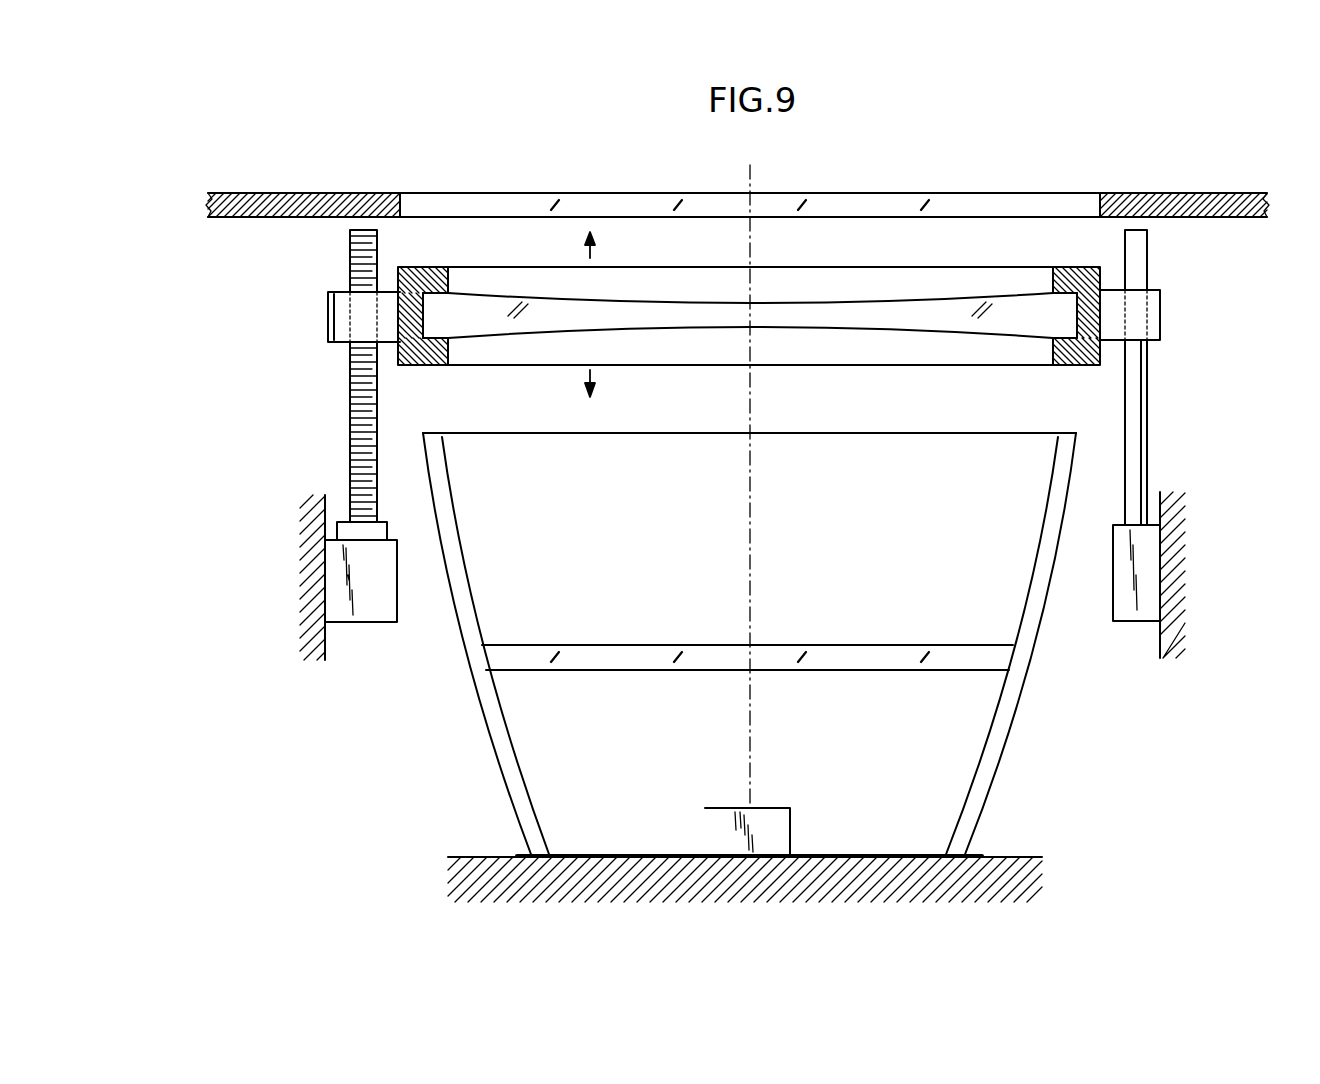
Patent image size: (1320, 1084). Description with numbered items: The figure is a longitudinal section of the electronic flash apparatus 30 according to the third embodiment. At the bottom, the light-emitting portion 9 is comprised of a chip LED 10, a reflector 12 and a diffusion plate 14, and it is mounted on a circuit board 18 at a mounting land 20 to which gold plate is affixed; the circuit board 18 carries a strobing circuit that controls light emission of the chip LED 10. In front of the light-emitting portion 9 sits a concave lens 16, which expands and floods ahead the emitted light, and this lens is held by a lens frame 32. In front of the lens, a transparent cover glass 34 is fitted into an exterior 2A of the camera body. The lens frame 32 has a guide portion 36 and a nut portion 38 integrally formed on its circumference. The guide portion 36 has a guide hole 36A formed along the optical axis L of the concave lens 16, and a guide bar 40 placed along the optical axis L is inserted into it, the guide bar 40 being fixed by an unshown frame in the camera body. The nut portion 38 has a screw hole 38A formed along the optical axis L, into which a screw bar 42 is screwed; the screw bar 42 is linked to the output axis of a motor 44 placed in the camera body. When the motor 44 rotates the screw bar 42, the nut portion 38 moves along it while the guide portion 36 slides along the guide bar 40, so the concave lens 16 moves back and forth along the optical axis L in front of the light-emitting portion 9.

The lens unit 30 is at (176, 150).
The exterior 2A is at (325, 194).
The cover glass 34 is at (478, 203).
The lens frame 32 is at (1062, 366).
The concave lens 16 is at (876, 308).
The nut portion 38 is at (328, 316).
The screw hole 38A is at (360, 318).
The guide portion 36 is at (1155, 312).
The guide hole 36A is at (1140, 322).
The screw bar 42 is at (352, 455).
The motor 44 is at (375, 585).
The guide bar 40 is at (1147, 422).
The optical axis L is at (750, 453).
The light-emitting portion 9 is at (469, 418).
The reflector 12 is at (1003, 712).
The diffusion plate 14 is at (873, 655).
The circuit board 18 is at (470, 856).
The mounting land 20 is at (643, 851).
The chip LED 10 is at (706, 826).